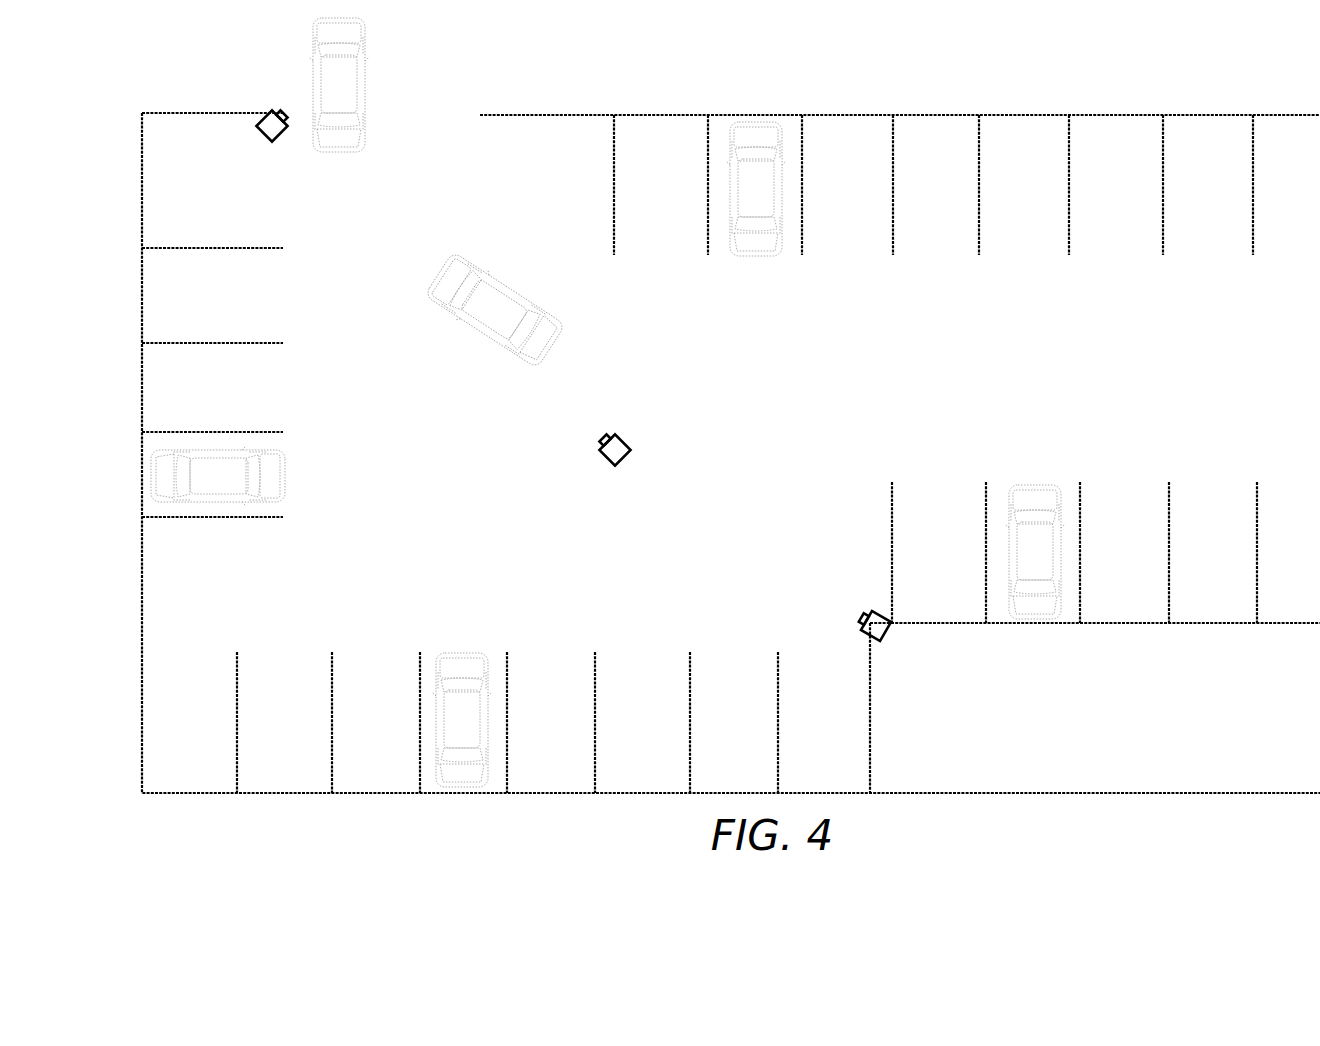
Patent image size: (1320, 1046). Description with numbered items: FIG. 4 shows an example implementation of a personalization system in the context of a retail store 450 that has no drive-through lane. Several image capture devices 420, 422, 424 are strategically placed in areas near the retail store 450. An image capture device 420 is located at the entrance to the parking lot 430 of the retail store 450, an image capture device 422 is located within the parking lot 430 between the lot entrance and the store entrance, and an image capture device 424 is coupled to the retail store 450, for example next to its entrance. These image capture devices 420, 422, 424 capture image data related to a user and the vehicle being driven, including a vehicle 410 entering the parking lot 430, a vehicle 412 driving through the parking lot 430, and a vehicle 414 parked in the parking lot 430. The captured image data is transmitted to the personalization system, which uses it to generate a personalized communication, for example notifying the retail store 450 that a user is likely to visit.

The vehicle entering the parking lot 410 is at (368, 34).
The vehicle driving through the parking lot 412 is at (438, 278).
The vehicle parked in the parking lot 414 is at (762, 257).
The image capture device 420 is at (263, 135).
The image capture device 422 is at (612, 463).
The image capture device 424 is at (870, 640).
The parking lot 430 is at (900, 370).
The retail store 450 is at (1095, 741).